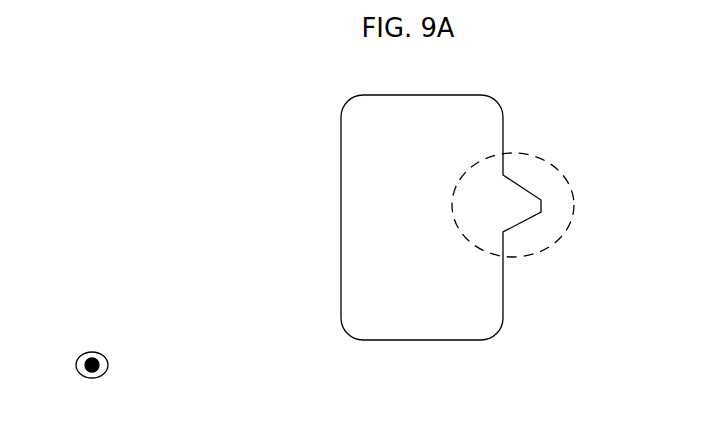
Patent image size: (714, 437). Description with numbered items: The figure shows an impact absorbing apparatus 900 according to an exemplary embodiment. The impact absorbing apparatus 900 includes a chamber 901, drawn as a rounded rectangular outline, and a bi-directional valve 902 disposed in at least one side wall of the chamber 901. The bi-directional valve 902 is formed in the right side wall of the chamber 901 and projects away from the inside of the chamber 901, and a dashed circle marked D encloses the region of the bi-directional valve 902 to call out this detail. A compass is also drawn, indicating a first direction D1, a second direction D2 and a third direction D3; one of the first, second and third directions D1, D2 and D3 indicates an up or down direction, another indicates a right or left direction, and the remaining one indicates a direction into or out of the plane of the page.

The impact absorbing apparatus 900 is at (132, 78).
The chamber 901 is at (339, 194).
The bi-directional valve 902 is at (543, 205).
The detail region D is at (575, 172).
The first direction D1 is at (92, 352).
The second direction D2 is at (110, 365).
The third direction D3 is at (77, 373).